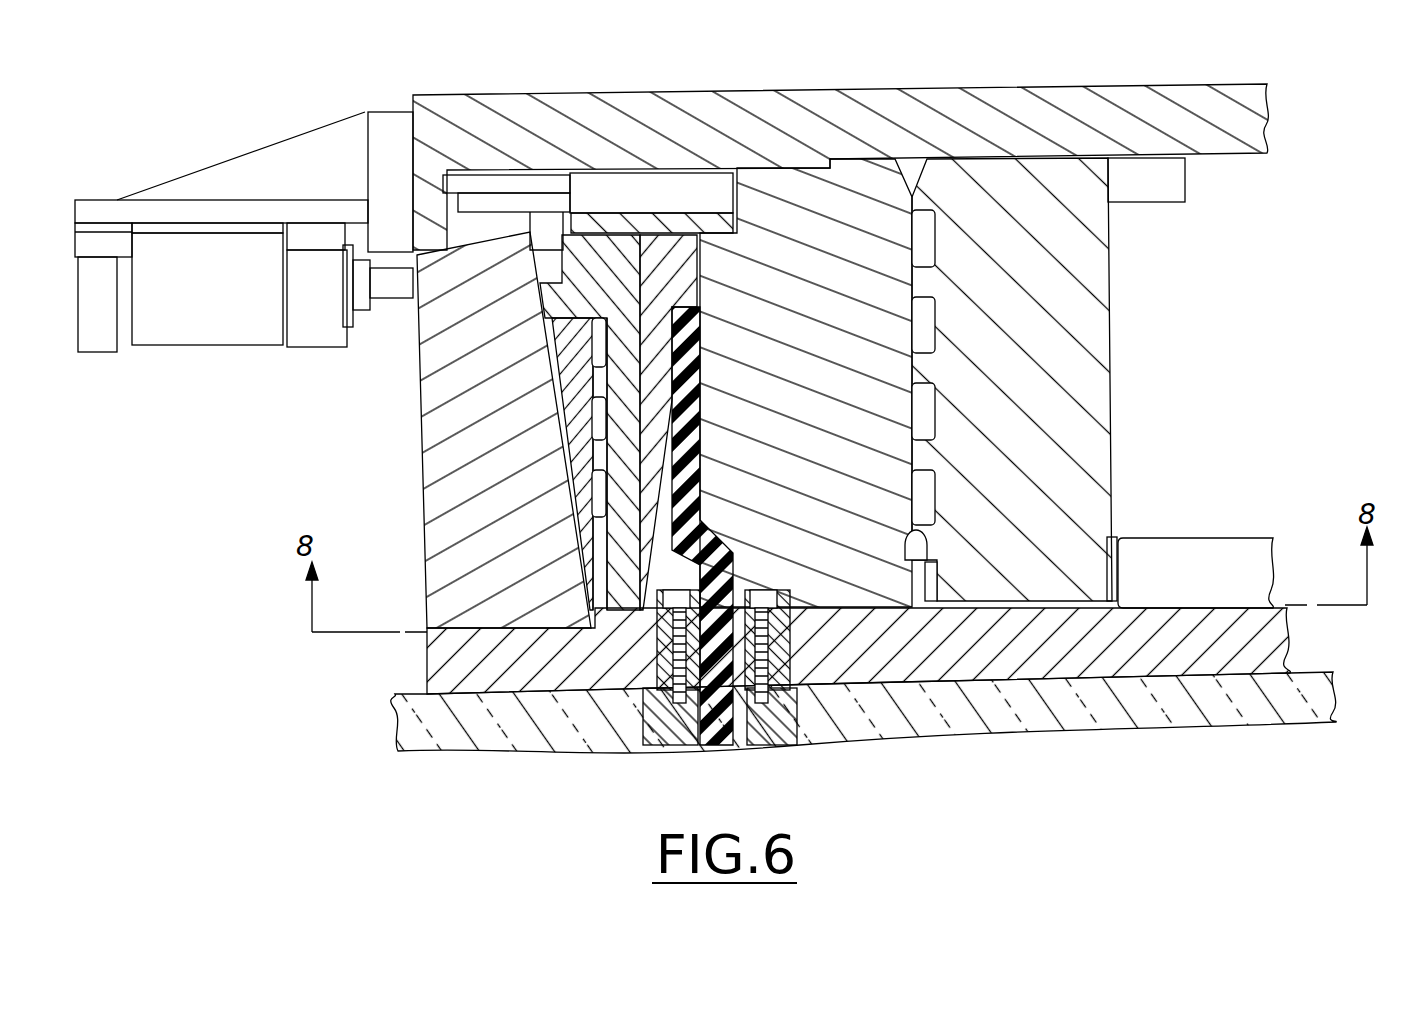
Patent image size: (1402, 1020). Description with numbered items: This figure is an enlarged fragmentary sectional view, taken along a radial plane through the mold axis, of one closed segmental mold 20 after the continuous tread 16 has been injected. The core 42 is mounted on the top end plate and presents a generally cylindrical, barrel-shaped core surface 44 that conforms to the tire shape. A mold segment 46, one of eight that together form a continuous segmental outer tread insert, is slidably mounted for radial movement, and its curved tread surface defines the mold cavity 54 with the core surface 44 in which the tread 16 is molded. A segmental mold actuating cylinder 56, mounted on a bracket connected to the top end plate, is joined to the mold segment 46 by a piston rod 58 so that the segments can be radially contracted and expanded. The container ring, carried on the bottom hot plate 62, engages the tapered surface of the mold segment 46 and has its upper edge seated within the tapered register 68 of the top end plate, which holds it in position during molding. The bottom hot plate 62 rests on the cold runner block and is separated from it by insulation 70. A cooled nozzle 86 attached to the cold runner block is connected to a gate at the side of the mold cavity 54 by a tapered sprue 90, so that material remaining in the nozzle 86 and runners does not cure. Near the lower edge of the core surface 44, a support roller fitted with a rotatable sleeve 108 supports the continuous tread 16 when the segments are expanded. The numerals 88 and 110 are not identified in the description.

The continuous tread 16 is at (688, 407).
The segmental mold 20 is at (613, 556).
The core 42 is at (1013, 170).
The core surface 44 is at (775, 217).
The mold segment 46 is at (623, 223).
The mold cavity 54 is at (672, 453).
The segmental mold actuating cylinder 56 is at (187, 333).
The piston rod 58 is at (395, 292).
The bottom hot plate 62 is at (437, 670).
The tapered register 68 is at (450, 228).
The insulation 70 is at (398, 725).
The cooled nozzle 86 is at (772, 723).
The seal strip 88 is at (722, 747).
The tapered sprue 90 is at (715, 547).
The rotatable sleeve 108 is at (578, 750).
The bolt 110 is at (655, 747).